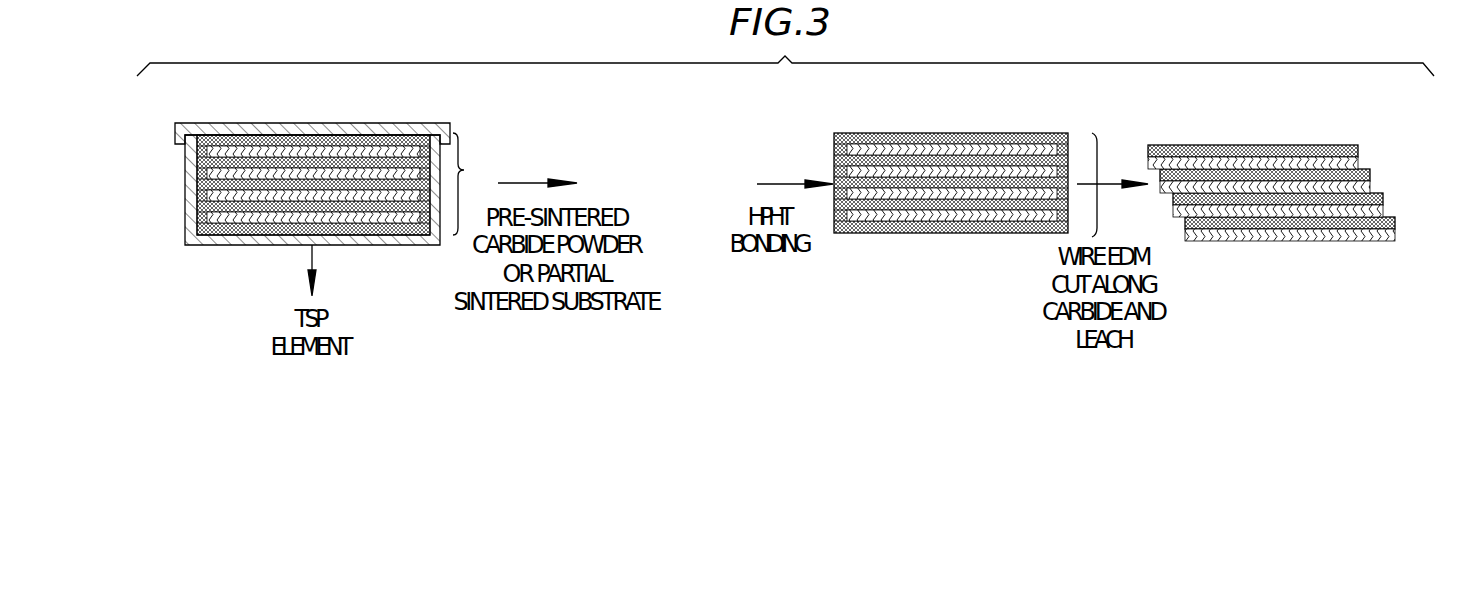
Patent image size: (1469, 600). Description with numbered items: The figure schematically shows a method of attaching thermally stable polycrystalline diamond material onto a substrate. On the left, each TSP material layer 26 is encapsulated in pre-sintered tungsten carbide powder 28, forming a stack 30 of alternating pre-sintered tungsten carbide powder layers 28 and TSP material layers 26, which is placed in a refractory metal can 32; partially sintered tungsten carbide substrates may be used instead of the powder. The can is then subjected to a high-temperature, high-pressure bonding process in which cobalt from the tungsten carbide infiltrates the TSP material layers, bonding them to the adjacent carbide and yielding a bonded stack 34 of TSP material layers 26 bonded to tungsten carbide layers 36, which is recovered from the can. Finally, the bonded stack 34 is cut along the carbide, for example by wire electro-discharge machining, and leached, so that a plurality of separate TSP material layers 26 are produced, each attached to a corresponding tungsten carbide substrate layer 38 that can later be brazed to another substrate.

The TSP material layer 26 is at (201, 176).
The pre-sintered tungsten carbide powder layer 28 is at (283, 133).
The stack 30 is at (464, 168).
The refractory metal can 32 is at (191, 148).
The bonded stack 34 is at (1097, 170).
The tungsten carbide layer 36 is at (884, 233).
The substrate layer 38 is at (1308, 146).